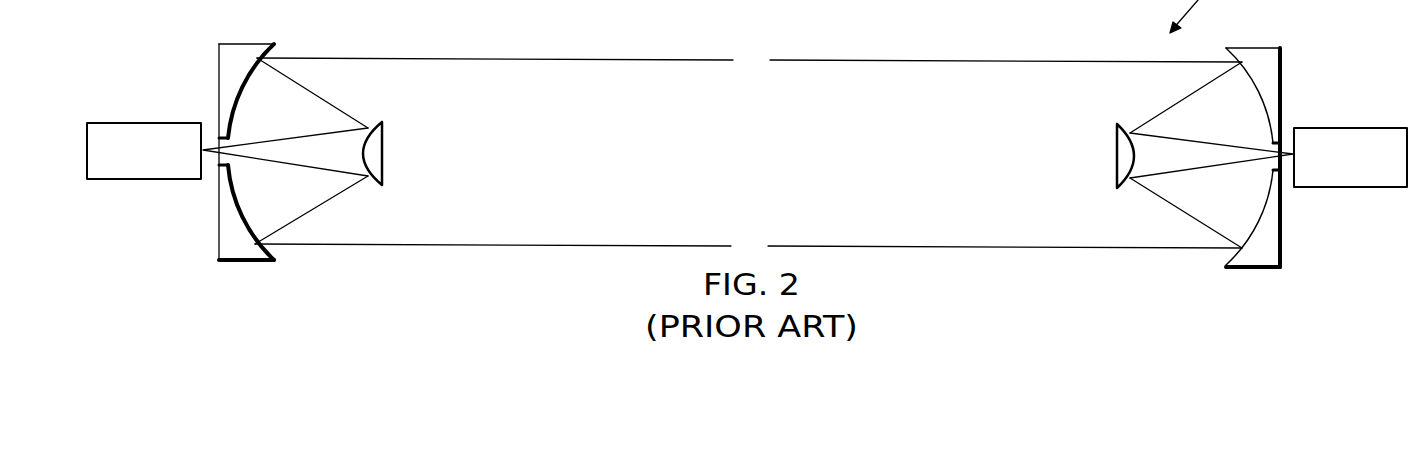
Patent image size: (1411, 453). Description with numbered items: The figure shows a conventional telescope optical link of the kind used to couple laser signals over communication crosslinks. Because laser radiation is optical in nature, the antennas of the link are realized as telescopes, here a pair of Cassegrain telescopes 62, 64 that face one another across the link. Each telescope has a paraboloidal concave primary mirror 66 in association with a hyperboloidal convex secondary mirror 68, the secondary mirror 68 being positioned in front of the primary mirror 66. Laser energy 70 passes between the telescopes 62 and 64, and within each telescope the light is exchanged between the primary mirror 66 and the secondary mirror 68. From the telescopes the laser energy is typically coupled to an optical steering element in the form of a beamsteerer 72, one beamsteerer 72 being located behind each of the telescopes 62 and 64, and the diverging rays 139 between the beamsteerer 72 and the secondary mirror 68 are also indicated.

The Cassegrain telescope 62 is at (217, 62).
The Cassegrain telescope 64 is at (1288, 65).
The paraboloidal concave primary mirror 66 is at (237, 88).
The hyperboloidal convex secondary mirror 68 is at (383, 148).
The laser energy 70 is at (748, 157).
The beamsteerer 72 is at (134, 122).
The diverging beam 139 is at (288, 165).